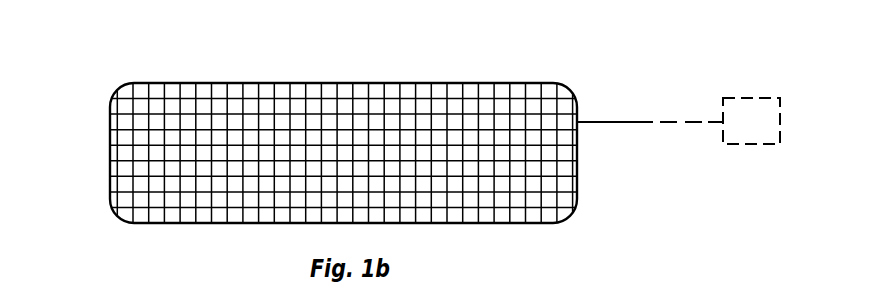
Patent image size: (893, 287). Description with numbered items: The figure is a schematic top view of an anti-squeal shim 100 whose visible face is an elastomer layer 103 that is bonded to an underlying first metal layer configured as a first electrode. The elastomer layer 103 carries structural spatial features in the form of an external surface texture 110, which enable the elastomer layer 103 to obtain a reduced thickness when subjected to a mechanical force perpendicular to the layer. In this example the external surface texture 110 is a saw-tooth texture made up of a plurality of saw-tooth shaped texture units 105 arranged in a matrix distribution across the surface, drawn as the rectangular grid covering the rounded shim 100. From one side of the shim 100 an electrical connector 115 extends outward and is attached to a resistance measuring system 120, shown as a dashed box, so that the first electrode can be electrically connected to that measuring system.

The anti-squeal shim 100 is at (309, 120).
The elastomer layer 103 is at (109, 121).
The saw-tooth shaped texture units 105 is at (127, 181).
The external surface texture 110 is at (202, 95).
The electrical connector 115 is at (604, 122).
The resistance measuring system 120 is at (752, 98).